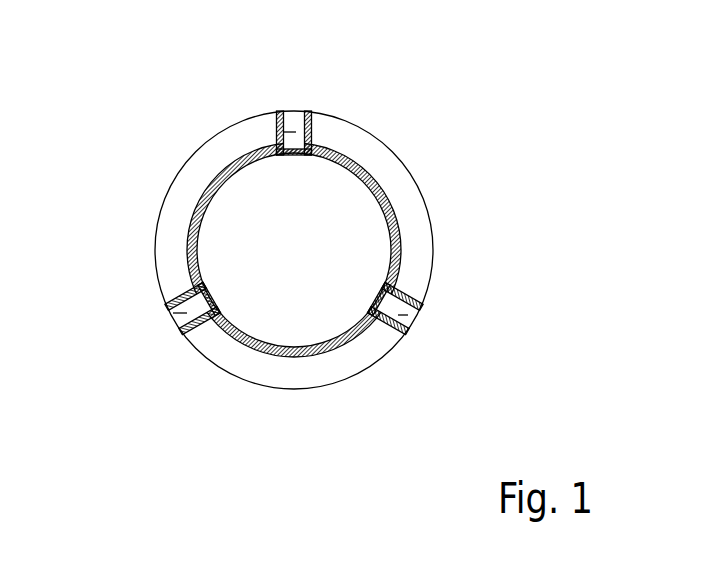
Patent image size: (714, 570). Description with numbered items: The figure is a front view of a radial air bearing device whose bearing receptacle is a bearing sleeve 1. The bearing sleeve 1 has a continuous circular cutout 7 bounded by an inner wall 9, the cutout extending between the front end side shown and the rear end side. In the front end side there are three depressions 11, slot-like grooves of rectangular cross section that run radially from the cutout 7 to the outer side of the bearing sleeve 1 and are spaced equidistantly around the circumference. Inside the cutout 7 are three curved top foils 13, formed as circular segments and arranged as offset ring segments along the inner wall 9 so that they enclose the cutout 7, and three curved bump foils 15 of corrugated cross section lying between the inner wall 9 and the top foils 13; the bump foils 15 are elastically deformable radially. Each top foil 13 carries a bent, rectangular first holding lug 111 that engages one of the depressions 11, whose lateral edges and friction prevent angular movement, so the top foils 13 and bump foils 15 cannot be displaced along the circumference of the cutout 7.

The bearing sleeve 1 is at (397, 152).
The continuous circular cutout 7 is at (337, 238).
The inner wall 9 is at (283, 152).
The depressions 11 is at (296, 114).
The top foils 13 is at (218, 198).
The bump foils 15 is at (197, 217).
The first holding lug 111 is at (277, 127).